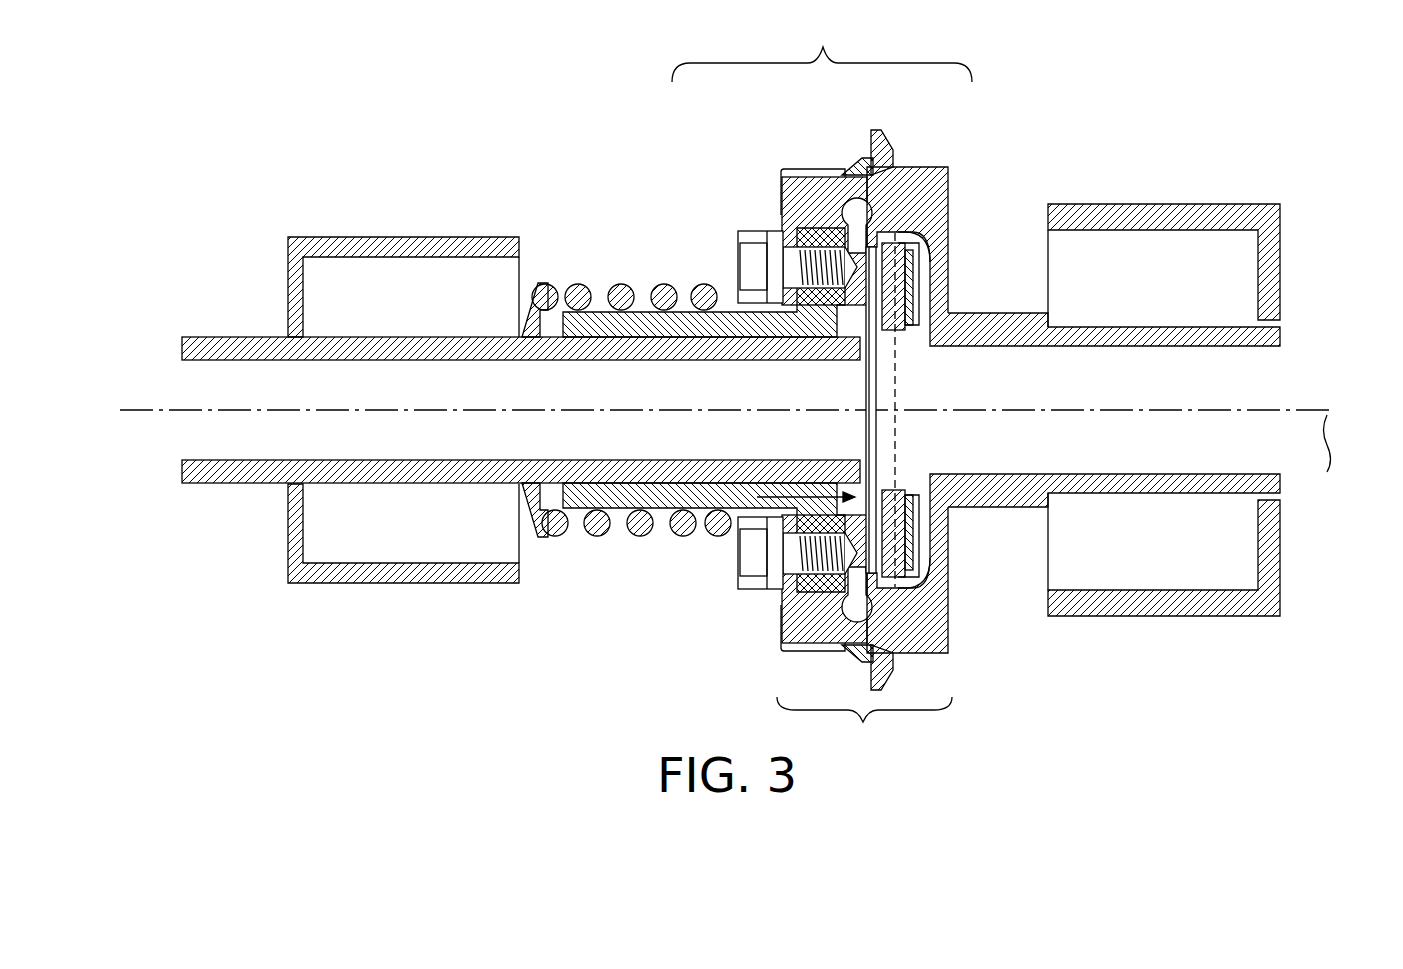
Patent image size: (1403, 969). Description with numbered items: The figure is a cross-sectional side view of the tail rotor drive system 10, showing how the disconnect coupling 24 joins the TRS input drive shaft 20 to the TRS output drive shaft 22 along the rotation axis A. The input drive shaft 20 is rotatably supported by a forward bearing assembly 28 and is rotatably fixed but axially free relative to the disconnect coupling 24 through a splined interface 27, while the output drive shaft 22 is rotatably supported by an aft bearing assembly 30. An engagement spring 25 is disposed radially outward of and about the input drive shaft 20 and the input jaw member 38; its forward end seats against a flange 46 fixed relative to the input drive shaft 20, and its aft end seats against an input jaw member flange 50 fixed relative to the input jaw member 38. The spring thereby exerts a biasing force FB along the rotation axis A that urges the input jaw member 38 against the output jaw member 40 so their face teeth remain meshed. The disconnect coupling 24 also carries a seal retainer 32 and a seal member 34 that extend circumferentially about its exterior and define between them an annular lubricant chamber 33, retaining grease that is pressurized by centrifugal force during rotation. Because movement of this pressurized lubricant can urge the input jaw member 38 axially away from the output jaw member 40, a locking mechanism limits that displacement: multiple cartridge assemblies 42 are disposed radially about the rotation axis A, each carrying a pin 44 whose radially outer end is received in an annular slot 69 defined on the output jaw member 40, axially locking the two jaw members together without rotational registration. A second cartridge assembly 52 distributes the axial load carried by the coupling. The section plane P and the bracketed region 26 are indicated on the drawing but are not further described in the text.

The tail rotor drive system 10 is at (358, 660).
The TRS input drive shaft 20 is at (222, 346).
The TRS output drive shaft 22 is at (1244, 338).
The disconnect coupling 24 is at (822, 47).
The engagement spring 25 is at (619, 294).
The hub assembly 26 is at (864, 727).
The splined interface 27 is at (612, 530).
The forward bearing assembly 28 is at (400, 248).
The aft bearing assembly 30 is at (1170, 212).
The seal retainer 32 is at (840, 170).
The annular lubricant chamber 33 is at (858, 168).
The seal member 34 is at (893, 163).
The input jaw member 38 is at (805, 626).
The output jaw member 40 is at (930, 626).
The cartridge assembly 42 is at (898, 338).
The pin 44 is at (900, 286).
The flange 46 is at (533, 298).
The input jaw member flange 50 is at (718, 308).
The second cartridge assembly 52 is at (903, 493).
The annular slot 69 is at (905, 232).
The plane P is at (895, 432).
The biasing force FB is at (795, 497).
The rotation axis A is at (1324, 461).